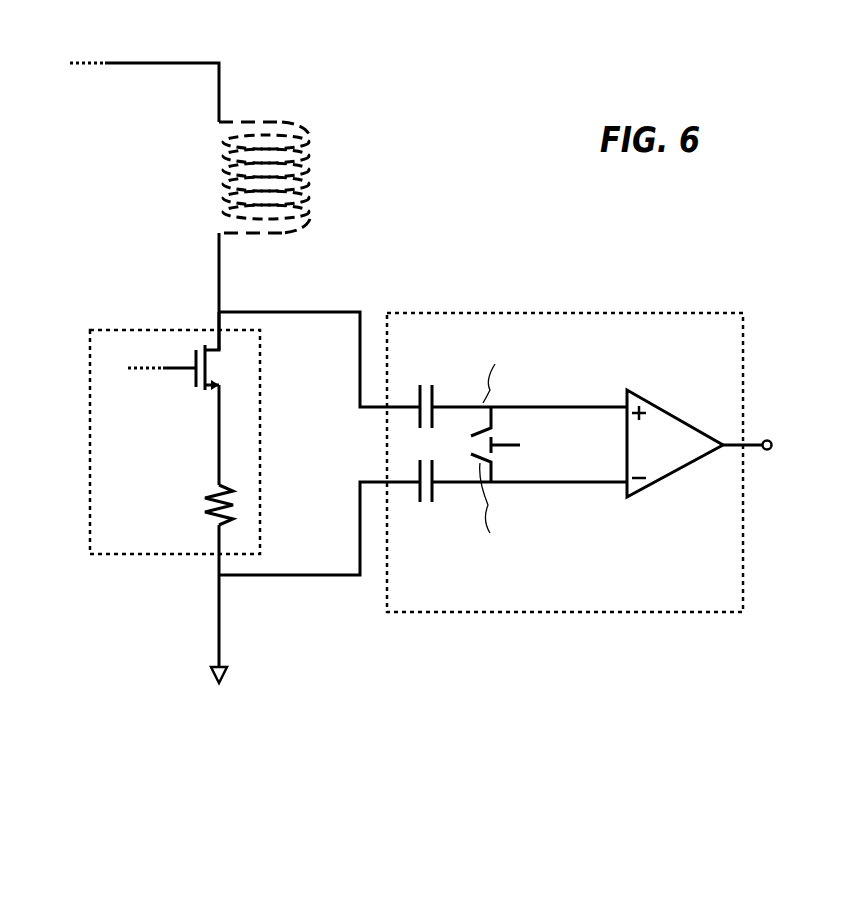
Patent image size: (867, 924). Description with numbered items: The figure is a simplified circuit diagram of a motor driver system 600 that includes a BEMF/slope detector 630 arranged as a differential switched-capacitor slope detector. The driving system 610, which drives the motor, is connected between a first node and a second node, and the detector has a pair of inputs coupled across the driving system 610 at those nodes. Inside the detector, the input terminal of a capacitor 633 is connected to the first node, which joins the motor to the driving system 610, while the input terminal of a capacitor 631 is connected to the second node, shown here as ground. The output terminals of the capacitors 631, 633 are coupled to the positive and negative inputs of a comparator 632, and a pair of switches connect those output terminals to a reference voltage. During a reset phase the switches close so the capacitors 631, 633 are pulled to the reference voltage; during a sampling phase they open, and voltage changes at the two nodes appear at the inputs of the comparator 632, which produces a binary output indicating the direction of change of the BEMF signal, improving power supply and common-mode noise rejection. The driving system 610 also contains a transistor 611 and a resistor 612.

The motor driver system 600 is at (678, 201).
The driving system 610 is at (194, 591).
The transistor 611 is at (252, 364).
The resistor 612 is at (252, 506).
The BEMF/slope detector 630 is at (603, 597).
The capacitor 631 is at (430, 518).
The comparator 632 is at (678, 472).
The capacitor 633 is at (430, 368).